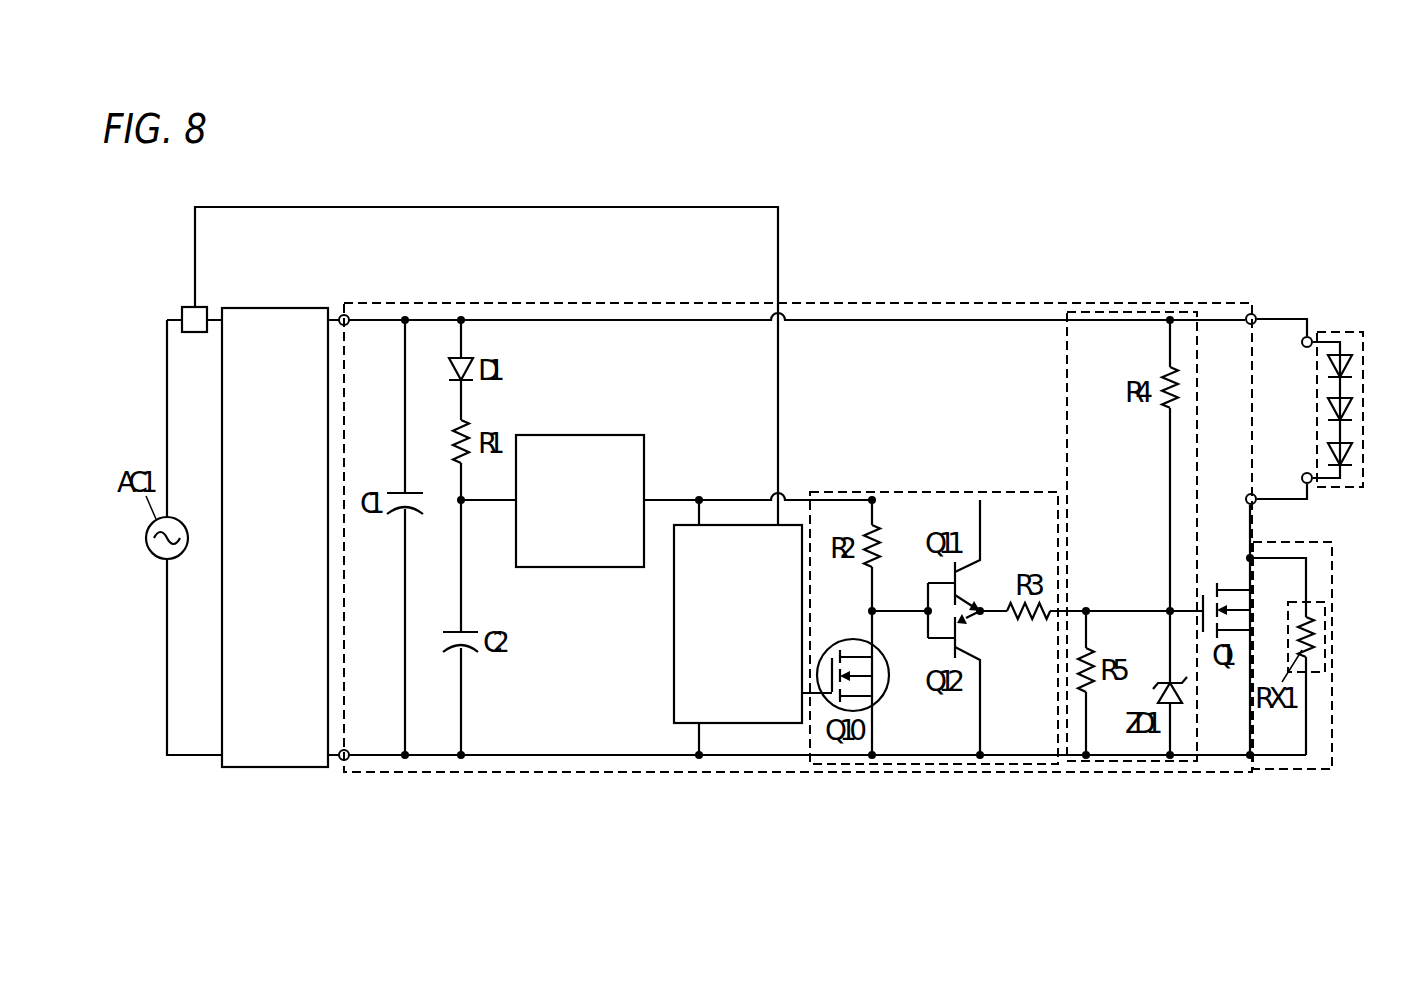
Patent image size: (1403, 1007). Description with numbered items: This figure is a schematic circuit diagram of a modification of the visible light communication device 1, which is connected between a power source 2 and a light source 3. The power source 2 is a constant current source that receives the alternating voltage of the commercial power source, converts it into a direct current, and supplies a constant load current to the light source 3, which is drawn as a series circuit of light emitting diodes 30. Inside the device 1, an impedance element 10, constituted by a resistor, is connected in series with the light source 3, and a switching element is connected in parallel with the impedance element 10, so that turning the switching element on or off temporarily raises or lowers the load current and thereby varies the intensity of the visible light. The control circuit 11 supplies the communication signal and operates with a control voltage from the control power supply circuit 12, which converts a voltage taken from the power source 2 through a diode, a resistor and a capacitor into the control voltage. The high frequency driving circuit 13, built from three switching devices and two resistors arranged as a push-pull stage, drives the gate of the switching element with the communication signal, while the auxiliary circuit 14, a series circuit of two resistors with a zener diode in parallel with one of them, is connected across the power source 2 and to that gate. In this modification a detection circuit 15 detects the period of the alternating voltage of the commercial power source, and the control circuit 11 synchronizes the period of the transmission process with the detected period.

The visible light communication device 1 is at (956, 297).
The power source 2 is at (280, 302).
The light source 3 is at (1355, 326).
The impedance element 10 is at (1324, 612).
The control circuit 11 is at (668, 656).
The control power supply circuit 12 is at (584, 433).
The high frequency driving circuit 13 is at (1000, 490).
The auxiliary circuit 14 is at (1065, 368).
The detection circuit 15 is at (186, 306).
The light emitting diode 30 is at (1346, 370).